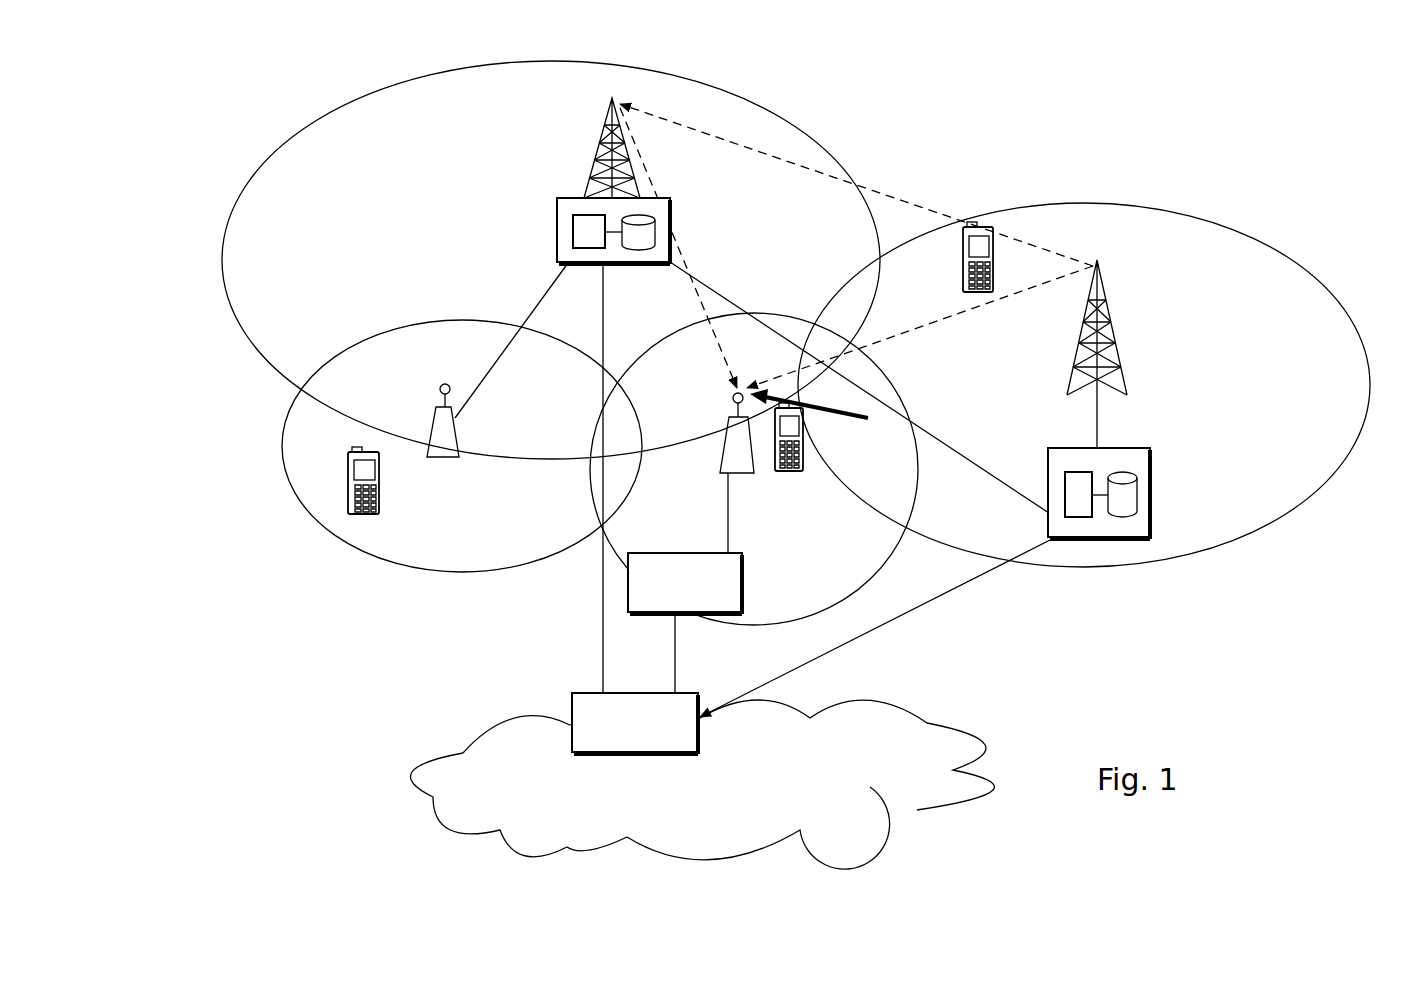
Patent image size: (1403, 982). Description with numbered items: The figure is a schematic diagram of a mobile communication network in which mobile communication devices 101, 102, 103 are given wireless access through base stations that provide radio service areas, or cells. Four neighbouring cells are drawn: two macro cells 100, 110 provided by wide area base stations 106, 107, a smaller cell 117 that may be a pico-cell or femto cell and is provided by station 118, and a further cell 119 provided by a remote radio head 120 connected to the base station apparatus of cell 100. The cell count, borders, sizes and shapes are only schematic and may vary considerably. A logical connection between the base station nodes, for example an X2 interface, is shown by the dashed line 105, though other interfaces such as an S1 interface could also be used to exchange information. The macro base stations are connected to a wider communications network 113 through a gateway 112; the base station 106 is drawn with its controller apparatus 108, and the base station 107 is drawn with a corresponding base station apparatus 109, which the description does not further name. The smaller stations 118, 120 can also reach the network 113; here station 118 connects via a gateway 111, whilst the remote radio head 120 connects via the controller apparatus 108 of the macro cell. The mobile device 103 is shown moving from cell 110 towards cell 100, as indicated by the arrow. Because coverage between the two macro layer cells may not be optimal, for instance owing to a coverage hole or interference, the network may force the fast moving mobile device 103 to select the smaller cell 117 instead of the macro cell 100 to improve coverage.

The macro cell 100 is at (266, 167).
The mobile communication device 101 is at (348, 488).
The mobile communication device 102 is at (993, 265).
The mobile communication device 103 is at (800, 475).
The X2 interface 105 is at (878, 185).
The wide area base station 106 is at (600, 163).
The wide area base station 107 is at (1115, 345).
The controller apparatus 108 is at (558, 220).
The base station 109 is at (1140, 473).
The macro cell 110 is at (1143, 564).
The gateway 111 is at (638, 588).
The gateway 112 is at (574, 695).
The wider communications network 113 is at (497, 765).
The smaller cell 117 is at (860, 590).
The base station 118 is at (737, 450).
The cell 119 is at (337, 540).
The remote radio head 120 is at (430, 417).